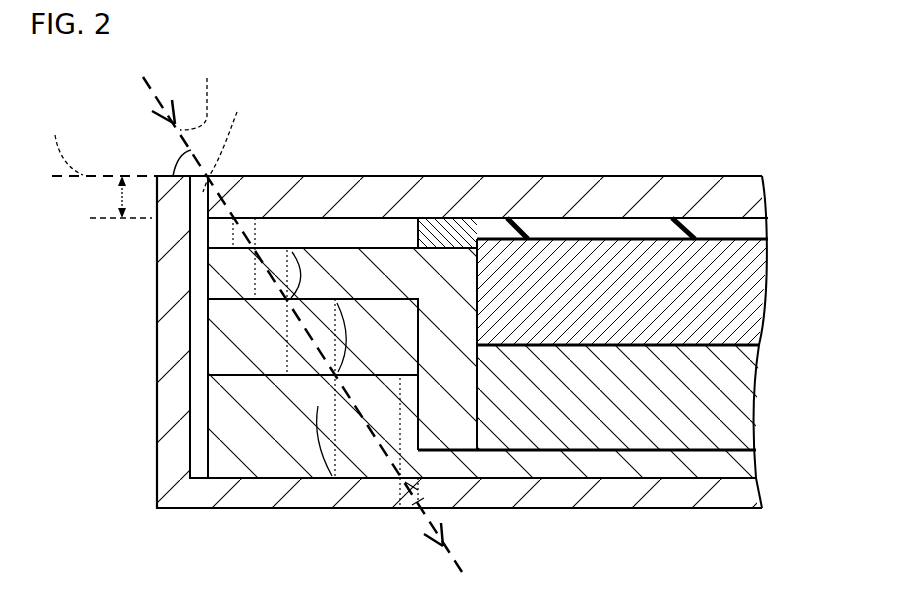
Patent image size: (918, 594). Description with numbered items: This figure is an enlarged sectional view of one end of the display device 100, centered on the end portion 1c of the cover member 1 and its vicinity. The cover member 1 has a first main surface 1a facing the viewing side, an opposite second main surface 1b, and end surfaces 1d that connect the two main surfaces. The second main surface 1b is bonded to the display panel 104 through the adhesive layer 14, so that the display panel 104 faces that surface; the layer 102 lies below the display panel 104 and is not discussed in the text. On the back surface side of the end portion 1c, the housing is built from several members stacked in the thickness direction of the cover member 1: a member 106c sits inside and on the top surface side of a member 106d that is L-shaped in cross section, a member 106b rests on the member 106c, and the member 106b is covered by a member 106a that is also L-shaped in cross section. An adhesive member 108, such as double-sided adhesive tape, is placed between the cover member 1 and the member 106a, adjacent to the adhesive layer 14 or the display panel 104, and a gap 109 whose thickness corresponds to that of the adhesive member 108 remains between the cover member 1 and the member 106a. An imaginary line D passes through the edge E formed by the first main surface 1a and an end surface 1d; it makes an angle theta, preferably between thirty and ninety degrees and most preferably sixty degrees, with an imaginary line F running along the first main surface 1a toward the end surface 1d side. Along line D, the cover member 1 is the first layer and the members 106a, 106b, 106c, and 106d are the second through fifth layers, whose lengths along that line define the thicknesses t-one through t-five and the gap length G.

The display device 100 is at (764, 135).
The cover member 1 is at (571, 192).
The first main surface 1a is at (702, 176).
The second main surface 1b is at (628, 225).
The end portion 1c is at (311, 186).
The end surface 1d is at (206, 195).
The adhesive layer 14 is at (728, 236).
The display panel 104 is at (728, 293).
The backlight unit 102 is at (730, 410).
The adhesive member 108 is at (446, 217).
The gap 109 is at (235, 236).
The member 106a is at (222, 275).
The member 106b is at (238, 340).
The member 106c is at (238, 418).
The member 106d is at (255, 493).
The line D is at (199, 92).
The edge E is at (224, 138).
The imaginary line F is at (63, 142).